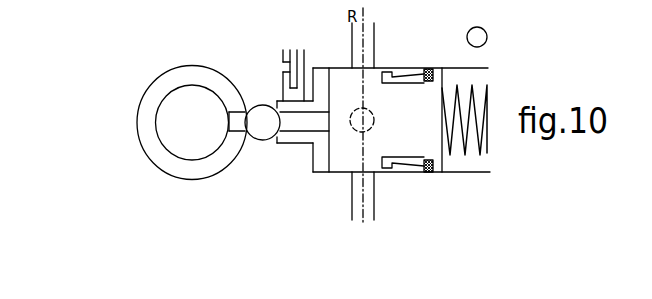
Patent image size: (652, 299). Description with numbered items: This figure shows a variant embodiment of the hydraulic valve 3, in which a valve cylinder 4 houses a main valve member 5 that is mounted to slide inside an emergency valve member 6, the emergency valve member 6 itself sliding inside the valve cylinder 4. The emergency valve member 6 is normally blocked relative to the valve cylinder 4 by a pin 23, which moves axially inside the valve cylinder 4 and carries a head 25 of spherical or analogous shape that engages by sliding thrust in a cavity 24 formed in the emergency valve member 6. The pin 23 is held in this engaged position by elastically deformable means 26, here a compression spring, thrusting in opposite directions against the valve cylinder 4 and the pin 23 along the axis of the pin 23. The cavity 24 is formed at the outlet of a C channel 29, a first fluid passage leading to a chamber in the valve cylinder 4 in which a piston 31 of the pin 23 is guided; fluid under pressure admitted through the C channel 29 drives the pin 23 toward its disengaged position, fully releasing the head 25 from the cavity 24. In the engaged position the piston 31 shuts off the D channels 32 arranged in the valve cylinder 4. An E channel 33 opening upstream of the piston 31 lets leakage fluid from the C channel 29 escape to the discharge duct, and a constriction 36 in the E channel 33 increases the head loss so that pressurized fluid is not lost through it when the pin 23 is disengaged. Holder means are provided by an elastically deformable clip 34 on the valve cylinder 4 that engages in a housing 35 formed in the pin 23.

The hydraulic valve 3 is at (514, 44).
The valve cylinder 4 is at (477, 37).
The main valve member 5 is at (158, 152).
The emergency valve member 6 is at (188, 66).
The pin 23 is at (298, 132).
The cavity 24 is at (241, 98).
The head 25 is at (276, 131).
The elastically deformable means 26 is at (488, 148).
The C channel 29 is at (235, 143).
The piston 31 is at (329, 83).
The D channels 32 is at (375, 40).
The E channel 33 is at (283, 50).
The clip 34 is at (425, 68).
The housing 35 is at (384, 85).
The constriction 36 is at (283, 73).